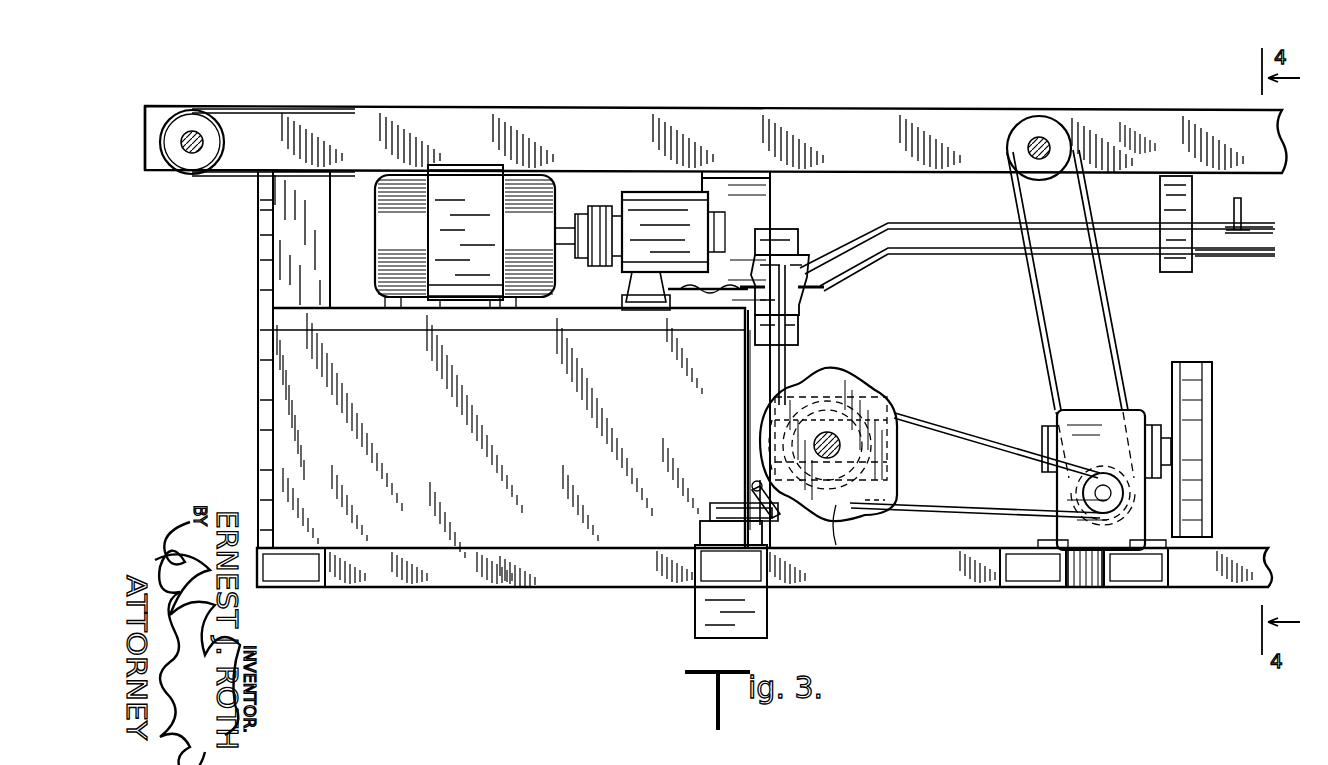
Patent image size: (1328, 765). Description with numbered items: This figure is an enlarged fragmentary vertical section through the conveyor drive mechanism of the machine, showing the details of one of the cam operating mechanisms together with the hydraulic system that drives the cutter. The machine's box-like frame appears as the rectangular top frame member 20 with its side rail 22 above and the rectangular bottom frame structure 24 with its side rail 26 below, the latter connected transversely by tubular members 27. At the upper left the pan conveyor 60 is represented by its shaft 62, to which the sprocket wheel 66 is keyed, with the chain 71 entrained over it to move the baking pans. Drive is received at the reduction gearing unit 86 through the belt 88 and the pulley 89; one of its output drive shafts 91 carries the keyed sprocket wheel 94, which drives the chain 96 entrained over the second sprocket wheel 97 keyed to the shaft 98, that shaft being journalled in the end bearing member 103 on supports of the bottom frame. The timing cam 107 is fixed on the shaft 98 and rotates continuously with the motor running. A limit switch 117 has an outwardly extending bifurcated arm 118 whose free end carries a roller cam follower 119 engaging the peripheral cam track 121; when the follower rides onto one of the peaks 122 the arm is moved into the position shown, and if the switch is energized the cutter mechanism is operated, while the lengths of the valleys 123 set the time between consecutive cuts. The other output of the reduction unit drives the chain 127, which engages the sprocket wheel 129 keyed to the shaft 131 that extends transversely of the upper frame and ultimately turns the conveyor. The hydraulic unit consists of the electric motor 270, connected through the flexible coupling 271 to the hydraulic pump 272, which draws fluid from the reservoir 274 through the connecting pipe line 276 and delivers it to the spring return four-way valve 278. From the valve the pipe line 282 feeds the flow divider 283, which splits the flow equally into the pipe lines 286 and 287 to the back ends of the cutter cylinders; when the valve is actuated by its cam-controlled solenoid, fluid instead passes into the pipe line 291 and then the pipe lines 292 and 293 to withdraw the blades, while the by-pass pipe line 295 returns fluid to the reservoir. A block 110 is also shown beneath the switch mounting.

The top frame member 20 is at (916, 103).
The side rail 22 is at (628, 118).
The bottom frame structure 24 is at (489, 600).
The side rail 26 is at (562, 574).
The tubular member 27 is at (318, 579).
The pan conveyor 60 is at (245, 195).
The shaft 62 is at (186, 158).
The sprocket wheel 66 is at (214, 142).
The chain 71 is at (322, 106).
The reduction gearing unit 86 is at (1103, 445).
The belt 88 is at (1189, 365).
The pulley 89 is at (1214, 428).
The drive shaft 91 is at (1104, 508).
The sprocket wheel 94 is at (1072, 488).
The chain 96 is at (984, 442).
The sprocket wheel 97 is at (840, 420).
The shaft 98 is at (840, 436).
The end bearing member 103 is at (890, 462).
The timing cam 107 is at (854, 364).
The block 110 is at (731, 533).
The limit switch 117 is at (710, 498).
The bifurcated arm 118 is at (772, 512).
The cam follower 119 is at (752, 486).
The peripheral cam track 121 is at (853, 519).
The peak 122 is at (830, 372).
The valley 123 is at (804, 354).
The chain 127 is at (1108, 323).
The sprocket wheel 129 is at (1046, 130).
The shaft 131 is at (1026, 148).
The electric motor 270 is at (485, 205).
The flexible coupling 271 is at (598, 212).
The hydraulic pump 272 is at (685, 227).
The reservoir 274 is at (452, 453).
The connecting pipe line 276 is at (778, 372).
The four-way valve 278 is at (804, 294).
The pipe line 282 is at (964, 254).
The flow divider 283 is at (1170, 260).
The pipe line 286 is at (1224, 258).
The pipe line 287 is at (1270, 260).
The pipe line 291 is at (956, 228).
The pipe line 292 is at (1242, 208).
The pipe line 293 is at (1255, 228).
The by-pass pipe line 295 is at (718, 304).